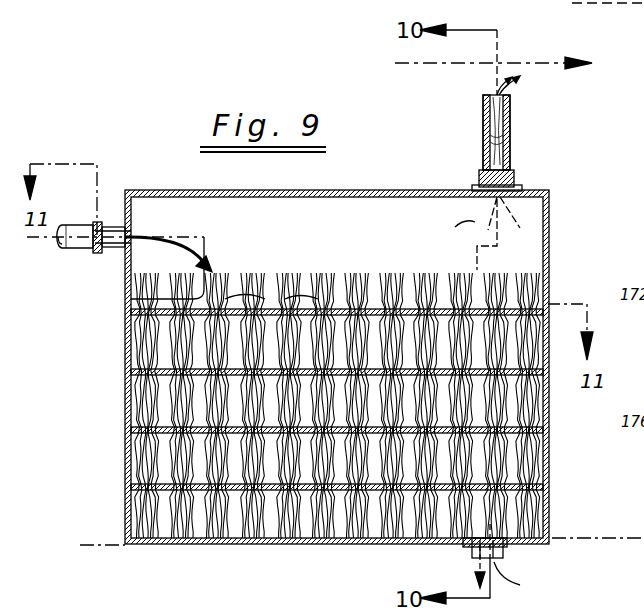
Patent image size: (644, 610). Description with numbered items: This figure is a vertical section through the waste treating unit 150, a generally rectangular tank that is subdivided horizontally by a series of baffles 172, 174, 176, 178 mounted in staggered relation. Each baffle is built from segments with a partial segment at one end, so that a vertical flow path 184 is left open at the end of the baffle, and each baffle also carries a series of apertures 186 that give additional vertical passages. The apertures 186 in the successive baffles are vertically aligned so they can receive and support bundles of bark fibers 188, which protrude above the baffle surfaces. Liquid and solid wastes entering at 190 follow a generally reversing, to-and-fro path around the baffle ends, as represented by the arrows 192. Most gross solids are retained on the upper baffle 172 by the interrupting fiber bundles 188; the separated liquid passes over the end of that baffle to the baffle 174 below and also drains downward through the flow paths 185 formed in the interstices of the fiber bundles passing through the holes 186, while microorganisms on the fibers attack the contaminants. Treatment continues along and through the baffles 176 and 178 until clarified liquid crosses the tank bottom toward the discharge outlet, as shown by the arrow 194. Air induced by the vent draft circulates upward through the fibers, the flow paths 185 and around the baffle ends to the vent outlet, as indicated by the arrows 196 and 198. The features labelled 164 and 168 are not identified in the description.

The waste treating unit 150 is at (553, 194).
The inlet conduit 164 is at (78, 249).
The outlet conduit 168 is at (556, 65).
The baffle 172 is at (340, 272).
The baffle 174 is at (370, 272).
The baffle 176 is at (316, 540).
The baffle 178 is at (370, 538).
The vertical flow path 184 is at (522, 443).
The flow path 185 is at (131, 306).
The aperture 186 is at (418, 292).
The bundle of bark fibers 188 is at (267, 300).
The waste entry 190 is at (161, 237).
The flow path arrow 192 is at (168, 355).
The discharge flow arrow 194 is at (477, 582).
The air circulation arrow 196 is at (497, 568).
The air circulation arrow 198 is at (503, 86).